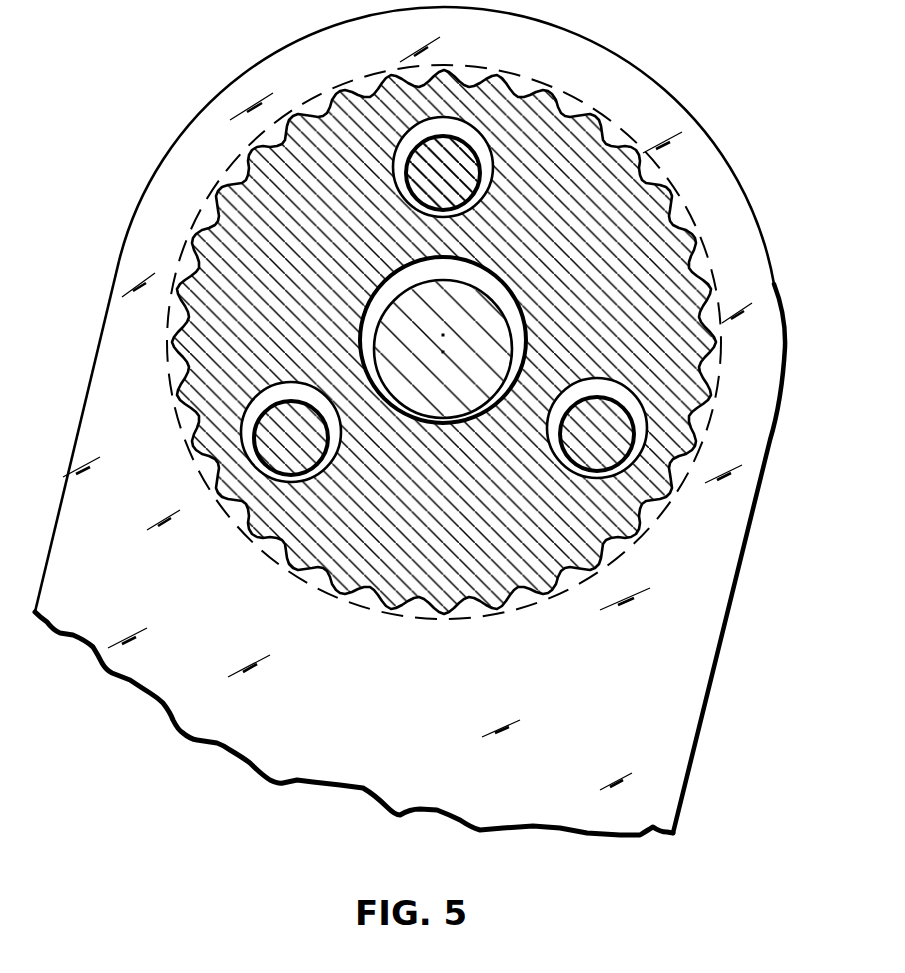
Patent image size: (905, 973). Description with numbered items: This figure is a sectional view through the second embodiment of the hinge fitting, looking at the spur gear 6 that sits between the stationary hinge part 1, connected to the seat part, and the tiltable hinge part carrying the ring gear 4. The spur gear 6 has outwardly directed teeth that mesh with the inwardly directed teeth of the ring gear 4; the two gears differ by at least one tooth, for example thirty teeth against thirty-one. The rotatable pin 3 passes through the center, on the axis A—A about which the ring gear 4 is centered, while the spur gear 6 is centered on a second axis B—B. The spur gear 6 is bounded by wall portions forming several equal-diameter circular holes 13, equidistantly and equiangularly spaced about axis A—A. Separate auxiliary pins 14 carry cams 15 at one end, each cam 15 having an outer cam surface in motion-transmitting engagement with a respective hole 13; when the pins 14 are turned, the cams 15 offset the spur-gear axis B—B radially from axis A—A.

The stationary hinge part 1 is at (698, 666).
The rotatable pin 3 is at (502, 328).
The ring gear 4 is at (623, 138).
The spur gear 6 is at (673, 208).
The circular holes 13 is at (490, 142).
The auxiliary pins 14 is at (473, 172).
The cams 15 is at (457, 127).